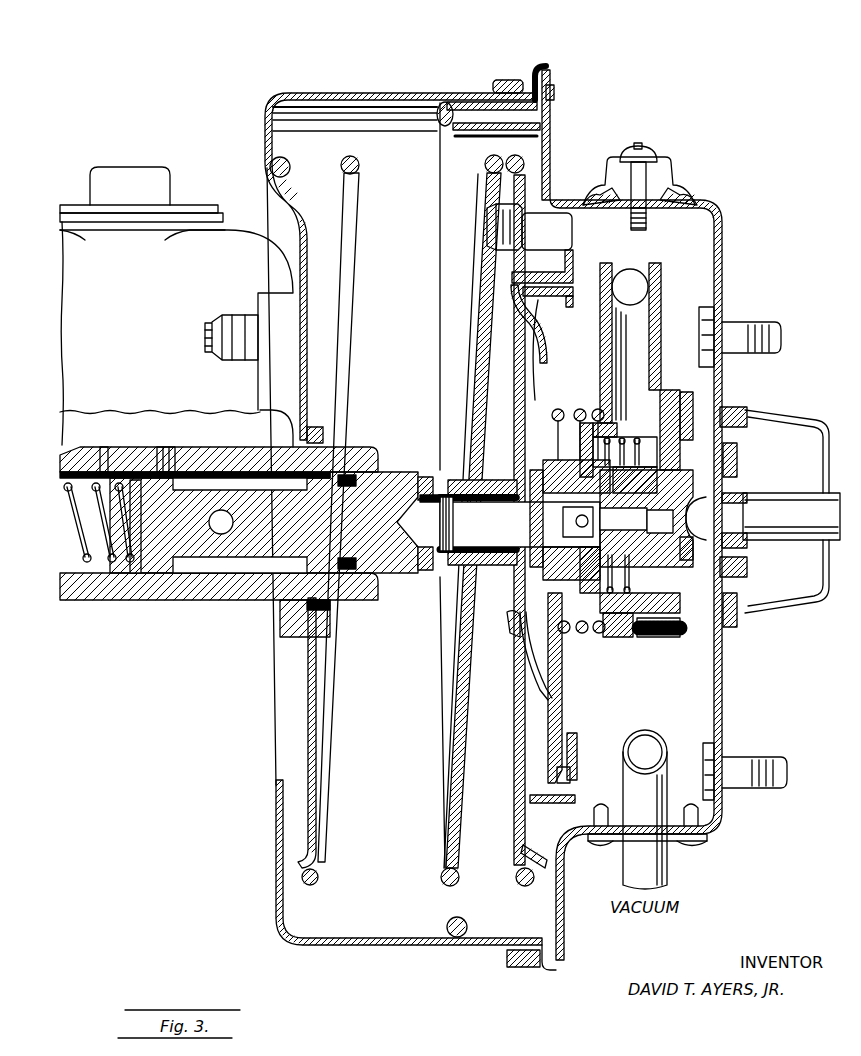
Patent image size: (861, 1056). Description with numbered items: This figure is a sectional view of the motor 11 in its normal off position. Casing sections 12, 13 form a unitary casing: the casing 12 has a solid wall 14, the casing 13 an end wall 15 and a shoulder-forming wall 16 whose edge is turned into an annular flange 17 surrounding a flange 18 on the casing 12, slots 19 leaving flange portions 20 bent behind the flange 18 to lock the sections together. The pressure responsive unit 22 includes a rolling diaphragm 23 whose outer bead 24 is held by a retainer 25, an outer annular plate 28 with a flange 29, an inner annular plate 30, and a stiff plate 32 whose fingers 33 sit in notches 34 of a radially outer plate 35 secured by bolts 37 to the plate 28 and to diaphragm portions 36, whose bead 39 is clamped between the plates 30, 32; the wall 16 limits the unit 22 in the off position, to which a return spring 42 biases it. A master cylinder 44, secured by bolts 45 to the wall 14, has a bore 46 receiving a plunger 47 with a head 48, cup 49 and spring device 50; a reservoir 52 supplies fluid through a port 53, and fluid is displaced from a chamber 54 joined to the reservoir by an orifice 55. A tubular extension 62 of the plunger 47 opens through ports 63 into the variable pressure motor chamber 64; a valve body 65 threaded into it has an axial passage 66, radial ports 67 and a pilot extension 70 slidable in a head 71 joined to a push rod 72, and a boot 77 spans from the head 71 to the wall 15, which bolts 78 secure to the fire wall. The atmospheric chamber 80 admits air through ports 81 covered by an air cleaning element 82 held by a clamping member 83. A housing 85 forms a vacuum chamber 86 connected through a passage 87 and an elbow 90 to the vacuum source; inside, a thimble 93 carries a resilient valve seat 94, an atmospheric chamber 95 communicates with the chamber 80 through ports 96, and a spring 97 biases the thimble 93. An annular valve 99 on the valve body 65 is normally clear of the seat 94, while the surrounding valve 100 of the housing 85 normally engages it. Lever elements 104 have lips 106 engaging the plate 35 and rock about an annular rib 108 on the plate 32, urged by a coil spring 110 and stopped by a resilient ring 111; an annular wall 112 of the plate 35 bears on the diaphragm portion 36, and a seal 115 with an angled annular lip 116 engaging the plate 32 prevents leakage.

The motor 11 is at (309, 86).
The casing section 12 is at (384, 94).
The casing section 13 is at (712, 205).
The solid wall 14 is at (270, 178).
The wall 15 is at (722, 224).
The wall 16 is at (551, 160).
The annular flange 17 is at (545, 66).
The annular flange 18 is at (540, 968).
The slots 19 is at (520, 68).
The flange portions 20 is at (505, 80).
The pressure responsive unit 22 is at (447, 245).
The rolling diaphragm 23 is at (436, 103).
The radially outer bead 24 is at (548, 88).
The retainer 25 is at (549, 108).
The outer annular plate 28 is at (522, 810).
The annular flange 29 is at (445, 118).
The inner annular plate 30 is at (520, 580).
The plate 32 is at (540, 400).
The fingers 33 is at (548, 320).
The notch 34 is at (572, 300).
The radially outer plate 35 is at (563, 266).
The diaphragm portions 36 is at (520, 288).
The bolts 37 is at (486, 224).
The bead 39 is at (500, 482).
The return spring 42 is at (354, 220).
The master cylinder 44 is at (205, 597).
The bolts 45 is at (225, 320).
The bore 46 is at (232, 580).
The fluid displacing plunger 47 is at (400, 472).
The head 48 is at (158, 570).
The cup 49 is at (117, 580).
The spring device 50 is at (94, 575).
The reservoir 52 is at (176, 307).
The port 53 is at (170, 450).
The chamber 54 is at (82, 488).
The orifice 55 is at (104, 440).
The tubular extension 62 is at (457, 480).
The ports 63 is at (425, 477).
The motor chamber 64 is at (345, 122).
The valve body 65 is at (523, 523).
The axial passage 66 is at (489, 532).
The radial ports 67 is at (575, 527).
The axial extension 70 is at (655, 495).
The head 71 is at (690, 560).
The push rod 72 is at (803, 530).
The boot 77 is at (800, 422).
The bolts 78 is at (745, 325).
The atmospheric chamber 80 is at (712, 258).
The ports 81 is at (645, 222).
The air cleaning element 82 is at (662, 185).
The clamping member 83 is at (648, 152).
The housing 85 is at (632, 638).
The vacuum chamber 86 is at (650, 638).
The passage 87 is at (648, 345).
The elbow 90 is at (655, 878).
The metallic thimble 93 is at (622, 432).
The resilient valve seat 94 is at (584, 415).
The atmospheric chamber 95 is at (645, 605).
The ports 96 is at (682, 440).
The spring 97 is at (655, 408).
The annular valve 99 is at (582, 473).
The cooperating valve 100 is at (565, 462).
The lever elements 104 is at (568, 697).
The lips 106 is at (585, 750).
The annular rib 108 is at (540, 705).
The coil spring 110 is at (600, 640).
The resilient ring 111 is at (577, 628).
The annular wall 112 is at (578, 808).
The seal 115 is at (532, 527).
The annular lip 116 is at (520, 600).